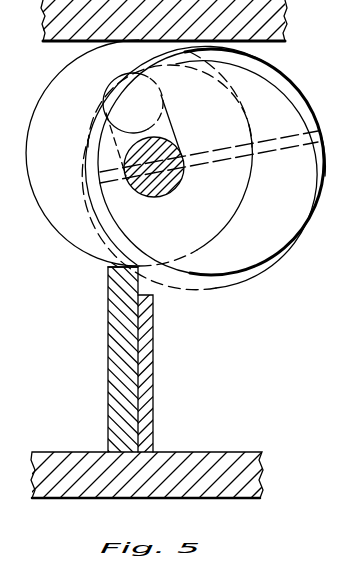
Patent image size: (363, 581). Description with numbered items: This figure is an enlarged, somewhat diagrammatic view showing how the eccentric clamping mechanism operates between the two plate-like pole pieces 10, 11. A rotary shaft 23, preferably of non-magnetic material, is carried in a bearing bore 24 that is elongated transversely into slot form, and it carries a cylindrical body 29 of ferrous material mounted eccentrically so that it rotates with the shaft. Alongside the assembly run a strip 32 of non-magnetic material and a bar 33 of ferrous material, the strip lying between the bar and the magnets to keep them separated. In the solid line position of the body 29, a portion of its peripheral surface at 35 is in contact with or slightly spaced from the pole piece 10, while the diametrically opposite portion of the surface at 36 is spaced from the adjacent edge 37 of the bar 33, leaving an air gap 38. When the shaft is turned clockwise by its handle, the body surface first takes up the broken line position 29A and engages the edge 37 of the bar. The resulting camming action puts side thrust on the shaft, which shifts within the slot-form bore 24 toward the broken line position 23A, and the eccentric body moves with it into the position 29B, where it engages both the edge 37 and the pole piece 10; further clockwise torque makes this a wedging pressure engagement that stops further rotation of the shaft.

The pole piece 10 is at (285, 12).
The pole piece 11 is at (246, 452).
The rotary shaft 23 is at (172, 190).
The broken line position of shaft 23A is at (163, 97).
The bearing bore 24 is at (176, 157).
The cylindrical body 29 is at (305, 97).
The broken line position of cylindrical body 29A is at (284, 105).
The position of cylindrical body 29B is at (33, 113).
The strip 32 is at (153, 362).
The bar 33 is at (108, 362).
The contact region 35 is at (243, 53).
The peripheral surface portion 36 is at (162, 261).
The edge of bar 37 is at (130, 273).
The air gap 38 is at (129, 264).